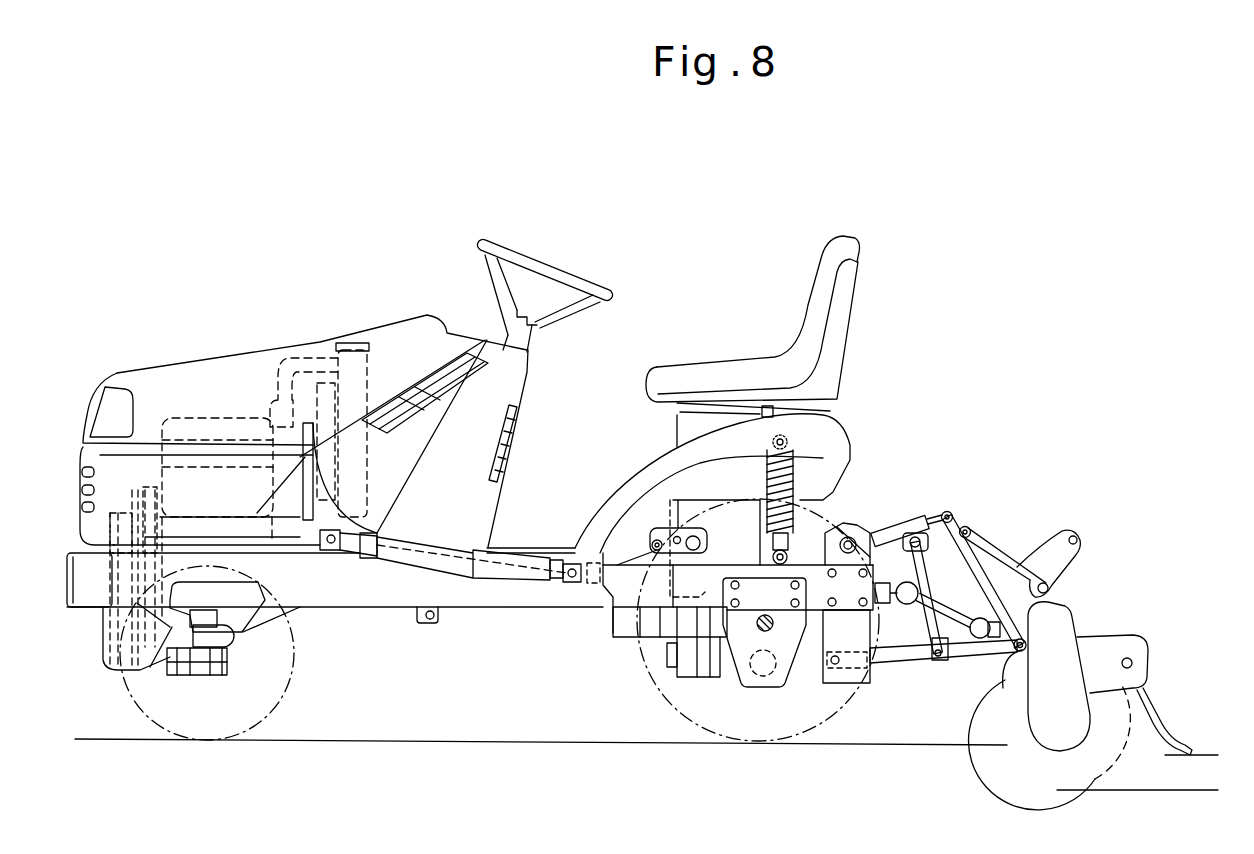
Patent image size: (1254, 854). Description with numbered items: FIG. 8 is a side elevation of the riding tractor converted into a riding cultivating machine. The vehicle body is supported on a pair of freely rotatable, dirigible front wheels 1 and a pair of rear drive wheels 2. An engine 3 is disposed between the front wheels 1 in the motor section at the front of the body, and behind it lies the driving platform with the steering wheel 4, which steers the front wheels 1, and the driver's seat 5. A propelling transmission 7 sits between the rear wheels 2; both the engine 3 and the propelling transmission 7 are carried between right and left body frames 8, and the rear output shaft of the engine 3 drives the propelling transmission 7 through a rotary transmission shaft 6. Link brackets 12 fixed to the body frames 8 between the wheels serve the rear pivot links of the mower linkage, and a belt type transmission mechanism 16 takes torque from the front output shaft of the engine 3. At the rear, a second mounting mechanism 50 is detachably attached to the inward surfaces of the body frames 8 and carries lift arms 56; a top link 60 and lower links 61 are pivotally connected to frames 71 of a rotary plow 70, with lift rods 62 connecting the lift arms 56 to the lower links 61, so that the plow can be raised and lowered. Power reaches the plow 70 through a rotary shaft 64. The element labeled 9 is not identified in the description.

The front wheels 1 is at (148, 722).
The rear drive wheels 2 is at (685, 717).
The engine 3 is at (213, 418).
The steering wheel 4 is at (538, 268).
The driver's seat 5 is at (805, 300).
The rotary transmission shaft 6 is at (407, 535).
The propelling transmission 7 is at (627, 548).
The body frames 8 is at (708, 572).
The mounting plate 9 is at (765, 686).
The link brackets 12 is at (433, 623).
The belt type transmission mechanism 16 is at (110, 580).
The second mounting mechanism 50 is at (821, 689).
The lift arms 56 is at (884, 530).
The top link 60 is at (920, 513).
The lower links 61 is at (913, 658).
The lift rods 62 is at (925, 560).
The rotary shaft 64 is at (960, 623).
The rotary plow 70 is at (1078, 585).
The frames 71 is at (1060, 632).